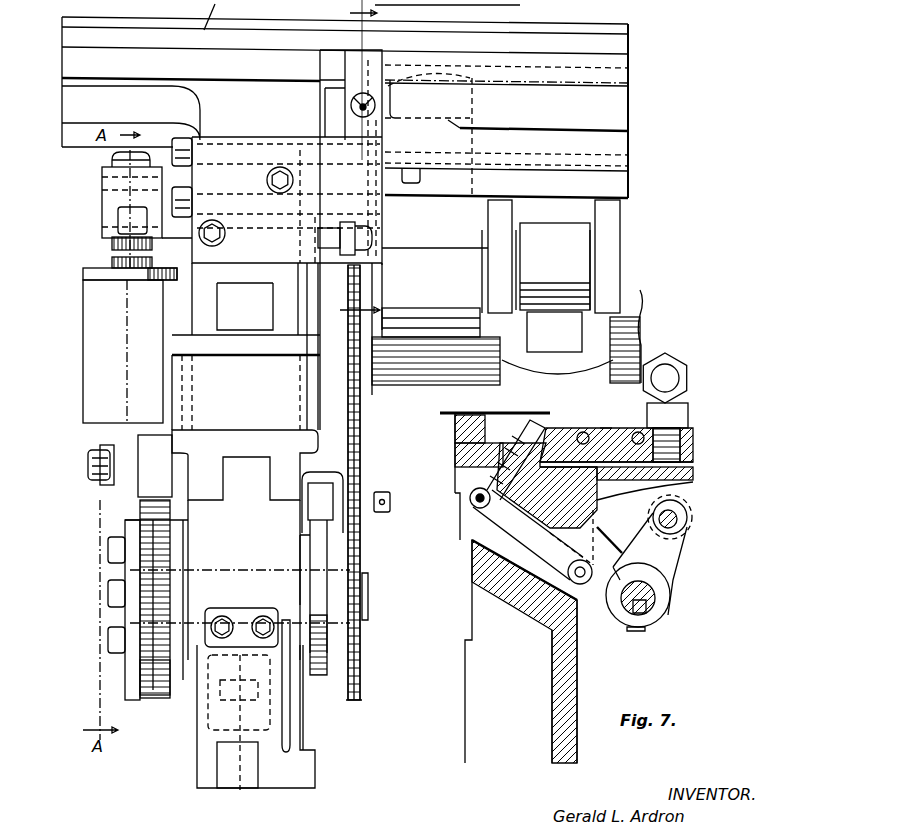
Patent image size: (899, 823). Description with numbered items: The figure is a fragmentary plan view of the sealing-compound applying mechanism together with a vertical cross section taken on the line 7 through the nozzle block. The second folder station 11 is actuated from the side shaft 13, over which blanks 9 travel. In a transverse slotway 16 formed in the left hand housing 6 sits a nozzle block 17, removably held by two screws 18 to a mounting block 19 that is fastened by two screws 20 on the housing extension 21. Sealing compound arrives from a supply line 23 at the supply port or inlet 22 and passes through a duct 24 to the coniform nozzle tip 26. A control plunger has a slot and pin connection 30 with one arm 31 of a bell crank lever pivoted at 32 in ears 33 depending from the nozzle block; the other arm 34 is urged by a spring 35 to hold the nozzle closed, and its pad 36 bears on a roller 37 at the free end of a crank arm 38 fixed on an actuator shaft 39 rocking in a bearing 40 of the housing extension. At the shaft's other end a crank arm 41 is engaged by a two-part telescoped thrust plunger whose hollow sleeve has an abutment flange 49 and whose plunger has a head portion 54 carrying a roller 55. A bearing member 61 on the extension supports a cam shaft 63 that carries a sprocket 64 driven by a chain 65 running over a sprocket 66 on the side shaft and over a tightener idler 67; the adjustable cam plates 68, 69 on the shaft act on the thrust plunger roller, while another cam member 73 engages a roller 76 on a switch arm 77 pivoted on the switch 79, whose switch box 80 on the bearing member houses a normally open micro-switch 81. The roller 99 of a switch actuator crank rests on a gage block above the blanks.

In FIG. 3, the left hand housing 6 is at (253, 82).
In FIG. 7, the left hand housing 6 is at (580, 692).
In FIG. 3, the roller 99 is at (440, 5).
In FIG. 3, the housing extension 21 is at (195, 104).
In FIG. 3, the nozzle block 17 is at (388, 52).
In FIG. 7, the nozzle block 17 is at (603, 428).
In FIG. 3, the transverse slotway 16 is at (320, 98).
In FIG. 3, the coniform nozzle tip 26 is at (378, 106).
In FIG. 3, the section line 7 is at (353, 167).
In FIG. 3, the mounting block 19 is at (265, 140).
In FIG. 3, the screws 20 is at (277, 195).
In FIG. 3, the screws 18 is at (182, 202).
In FIG. 7, the screws 18 is at (580, 432).
In FIG. 3, the supply line 23 is at (368, 232).
In FIG. 7, the supply line 23 is at (683, 410).
In FIG. 3, the crank arm 41 is at (117, 213).
In FIG. 3, the bearing 40 is at (176, 237).
In FIG. 3, the abutment flange 49 is at (90, 279).
In FIG. 3, the crank arm 38 is at (285, 248).
In FIG. 7, the crank arm 38 is at (667, 570).
In FIG. 3, the roller 55 is at (180, 450).
In FIG. 3, the head portion 54 is at (100, 470).
In FIG. 3, the cam shaft 63 is at (232, 575).
In FIG. 3, the cam plate 68 is at (137, 672).
In FIG. 3, the cam plate 69 is at (158, 700).
In FIG. 3, the switch box 80 is at (246, 609).
In FIG. 3, the switch 79 is at (198, 770).
In FIG. 3, the micro-switch 81 is at (240, 790).
In FIG. 3, the switch arm 77 is at (302, 722).
In FIG. 3, the chain 65 is at (365, 425).
In FIG. 3, the sprocket 66 is at (362, 673).
In FIG. 3, the tightener idler 67 is at (380, 468).
In FIG. 3, the sprocket 64 is at (378, 290).
In FIG. 3, the side shaft 13 is at (432, 386).
In FIG. 3, the second folder station 11 is at (488, 236).
In FIG. 3, the bearing member 61 is at (310, 500).
In FIG. 3, the cam member 73 is at (322, 556).
In FIG. 3, the roller 76 is at (330, 641).
In FIG. 7, the blanks 9 is at (515, 411).
In FIG. 7, the slot and pin connection 30 is at (471, 496).
In FIG. 7, the duct 24 is at (545, 425).
In FIG. 7, the bell crank lever arm 31 is at (500, 518).
In FIG. 7, the supply port or inlet 22 is at (695, 447).
In FIG. 7, the spring 35 is at (690, 482).
In FIG. 7, the pad 36 is at (693, 490).
In FIG. 7, the roller 37 is at (688, 521).
In FIG. 7, the bell crank lever arm 34 is at (645, 550).
In FIG. 7, the actuator shaft 39 is at (645, 602).
In FIG. 7, the ears 33 is at (565, 538).
In FIG. 7, the pivot 32 is at (550, 618).